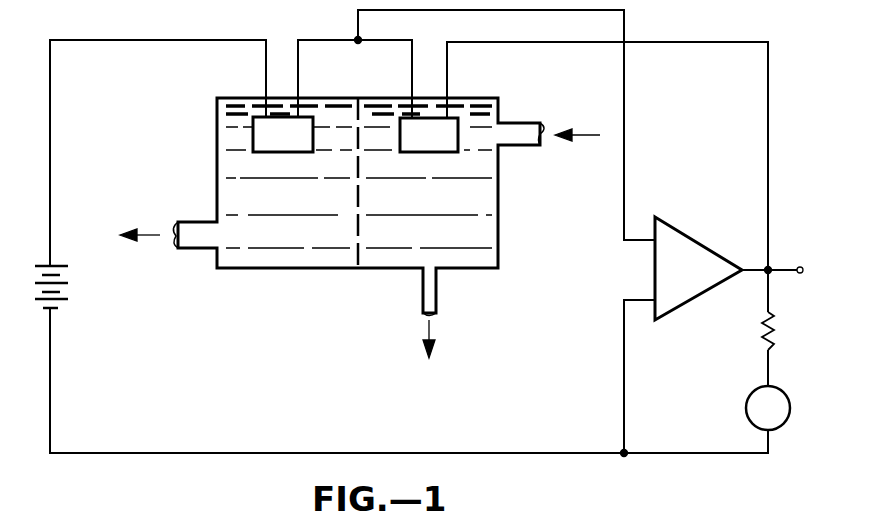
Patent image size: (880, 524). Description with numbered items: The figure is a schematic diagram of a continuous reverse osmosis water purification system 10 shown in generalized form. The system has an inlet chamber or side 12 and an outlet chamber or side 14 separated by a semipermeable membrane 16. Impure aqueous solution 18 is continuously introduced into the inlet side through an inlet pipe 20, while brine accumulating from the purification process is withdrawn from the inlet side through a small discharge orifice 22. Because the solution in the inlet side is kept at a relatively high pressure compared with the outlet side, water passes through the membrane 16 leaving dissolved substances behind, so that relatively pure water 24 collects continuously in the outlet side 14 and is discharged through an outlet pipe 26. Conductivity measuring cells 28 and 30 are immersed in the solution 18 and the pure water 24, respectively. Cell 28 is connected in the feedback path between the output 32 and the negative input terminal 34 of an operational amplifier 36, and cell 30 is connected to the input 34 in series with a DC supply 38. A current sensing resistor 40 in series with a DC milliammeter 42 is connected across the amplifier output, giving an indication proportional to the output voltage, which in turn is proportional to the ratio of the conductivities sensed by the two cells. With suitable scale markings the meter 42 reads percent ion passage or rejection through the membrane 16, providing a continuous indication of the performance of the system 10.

The continuous reverse osmosis water purification system 10 is at (268, 283).
The inlet chamber 12 is at (498, 187).
The outlet chamber 14 is at (220, 181).
The semipermeable membrane 16 is at (362, 235).
The impure aqueous solution 18 is at (484, 205).
The inlet pipe 20 is at (512, 122).
The discharge orifice 22 is at (437, 294).
The pure water 24 is at (228, 135).
The outlet pipe 26 is at (198, 222).
The conductivity measuring cell 28 is at (448, 116).
The conductivity measuring cell 30 is at (305, 116).
The output 32 is at (802, 262).
The negative input terminal 34 is at (643, 242).
The operational amplifier 36 is at (700, 248).
The DC supply 38 is at (62, 300).
The current sensing resistor 40 is at (760, 331).
The DC milliammeter 42 is at (759, 388).